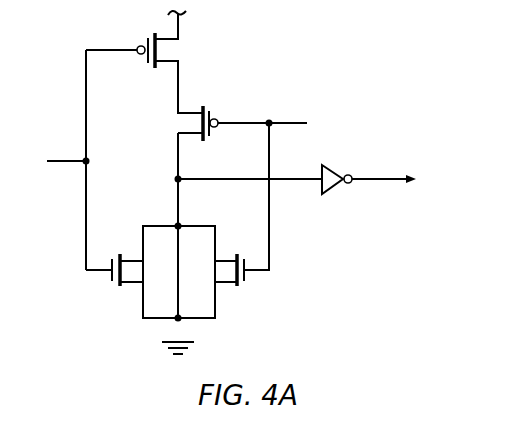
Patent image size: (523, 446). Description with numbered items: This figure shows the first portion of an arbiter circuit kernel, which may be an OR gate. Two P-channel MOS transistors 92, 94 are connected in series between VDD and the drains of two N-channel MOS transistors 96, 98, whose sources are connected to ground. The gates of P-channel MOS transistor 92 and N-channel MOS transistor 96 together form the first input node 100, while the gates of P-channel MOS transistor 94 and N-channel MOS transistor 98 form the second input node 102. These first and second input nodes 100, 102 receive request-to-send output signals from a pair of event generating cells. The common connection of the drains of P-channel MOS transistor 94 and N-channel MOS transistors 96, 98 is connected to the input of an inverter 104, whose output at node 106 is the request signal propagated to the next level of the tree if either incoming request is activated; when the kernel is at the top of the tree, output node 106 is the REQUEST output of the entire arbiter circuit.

The P-channel MOS transistor 92 is at (174, 51).
The P-channel MOS transistor 94 is at (204, 107).
The N-channel MOS transistor 96 is at (116, 288).
The N-channel MOS transistor 98 is at (240, 288).
The first input node 100 is at (86, 166).
The second input node 102 is at (270, 112).
The inverter 104 is at (333, 190).
The output node 106 is at (378, 178).